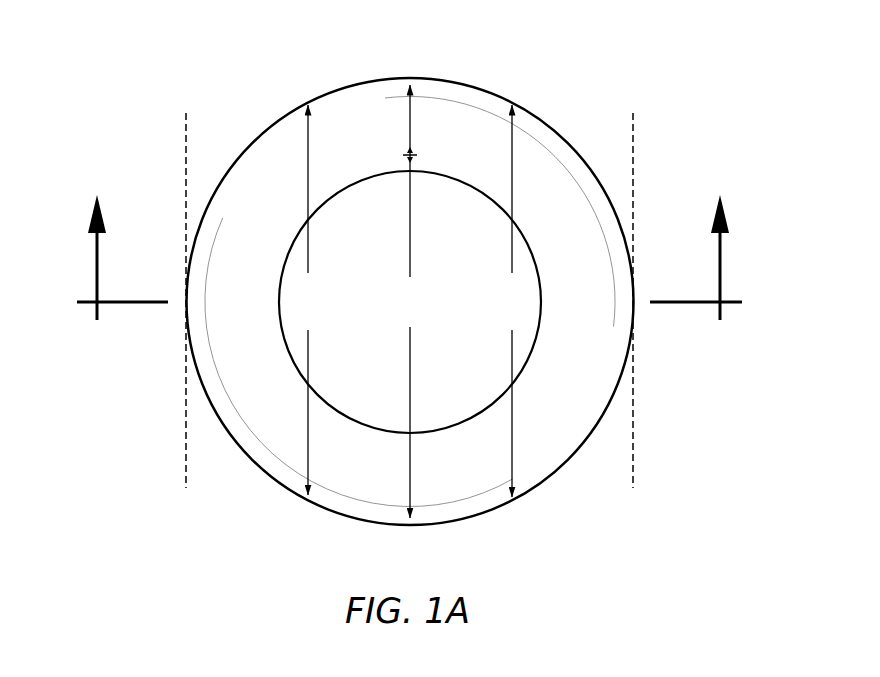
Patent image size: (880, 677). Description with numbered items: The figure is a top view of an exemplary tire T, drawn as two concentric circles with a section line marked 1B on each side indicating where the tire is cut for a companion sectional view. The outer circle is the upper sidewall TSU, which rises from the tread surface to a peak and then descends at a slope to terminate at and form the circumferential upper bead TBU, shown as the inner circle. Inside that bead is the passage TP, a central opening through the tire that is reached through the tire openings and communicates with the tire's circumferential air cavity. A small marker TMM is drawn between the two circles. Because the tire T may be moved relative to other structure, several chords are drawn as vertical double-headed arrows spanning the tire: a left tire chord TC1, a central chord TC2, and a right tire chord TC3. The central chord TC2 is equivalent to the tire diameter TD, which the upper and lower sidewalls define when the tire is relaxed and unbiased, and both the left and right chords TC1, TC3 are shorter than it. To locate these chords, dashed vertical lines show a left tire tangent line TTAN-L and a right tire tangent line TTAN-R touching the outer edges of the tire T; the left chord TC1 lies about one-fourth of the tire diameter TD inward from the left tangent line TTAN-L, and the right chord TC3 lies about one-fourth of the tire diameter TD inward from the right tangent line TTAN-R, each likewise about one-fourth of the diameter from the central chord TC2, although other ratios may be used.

The tire T is at (207, 80).
The upper sidewall TSU is at (343, 115).
The tire mid-section marker TMM is at (402, 133).
The circumferential upper bead TBU is at (537, 345).
The passage TP is at (447, 235).
The left tire tangent line TTAN-L is at (185, 133).
The right tire tangent line TTAN-R is at (633, 143).
The left tire chord TC1 is at (313, 300).
The tire diameter TD is at (410, 301).
The central chord TC2 is at (410, 301).
The right tire chord TC3 is at (514, 301).
The section line 1B- 1B is at (410, 261).